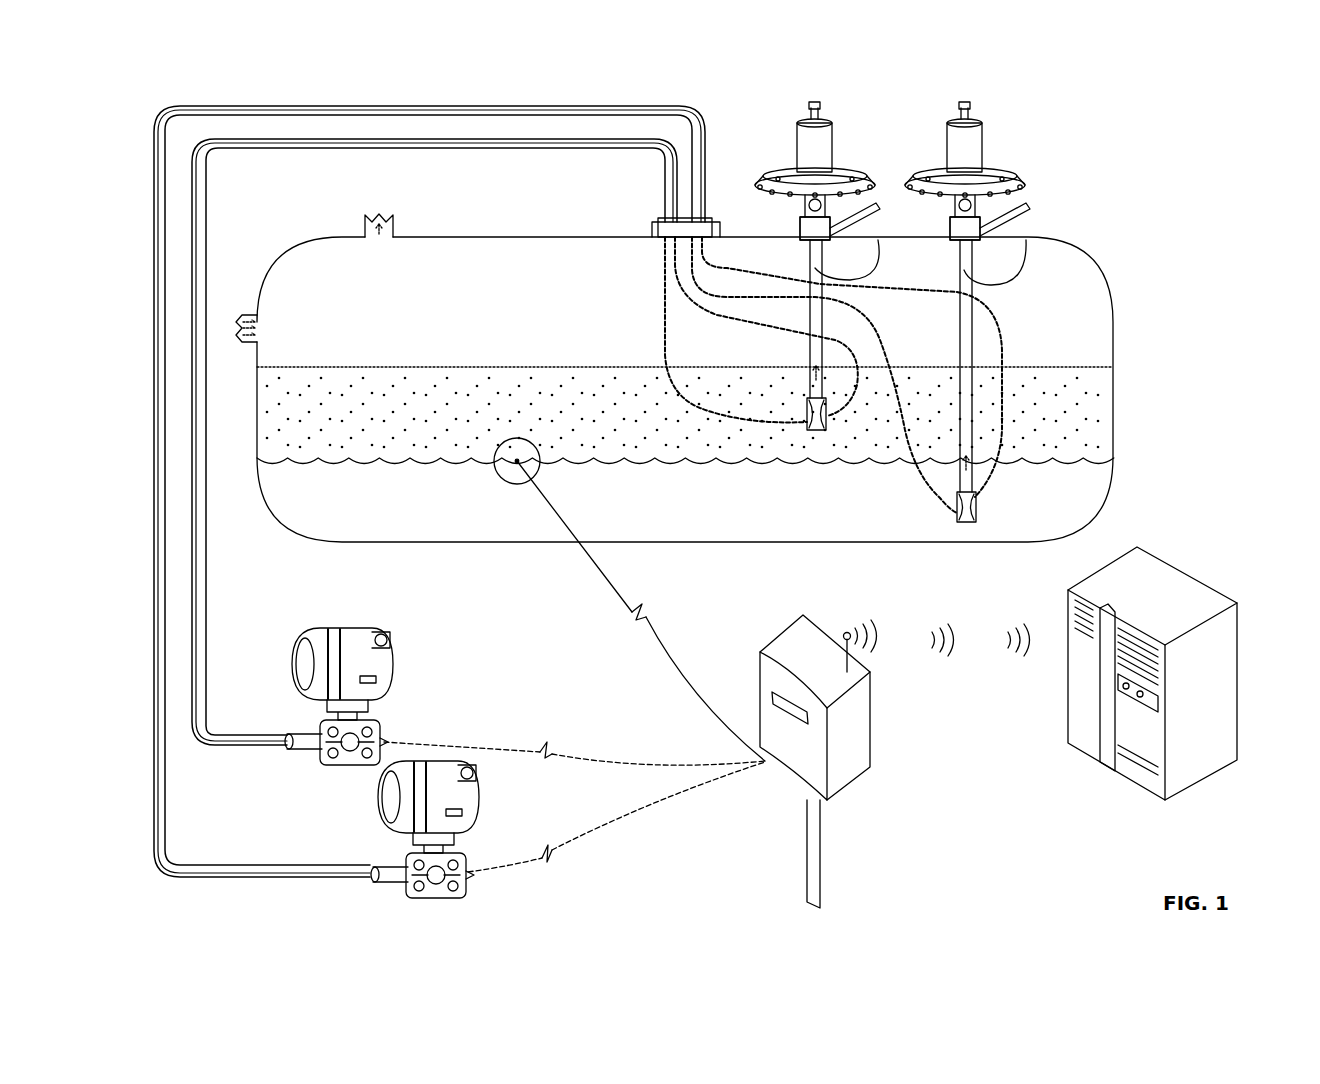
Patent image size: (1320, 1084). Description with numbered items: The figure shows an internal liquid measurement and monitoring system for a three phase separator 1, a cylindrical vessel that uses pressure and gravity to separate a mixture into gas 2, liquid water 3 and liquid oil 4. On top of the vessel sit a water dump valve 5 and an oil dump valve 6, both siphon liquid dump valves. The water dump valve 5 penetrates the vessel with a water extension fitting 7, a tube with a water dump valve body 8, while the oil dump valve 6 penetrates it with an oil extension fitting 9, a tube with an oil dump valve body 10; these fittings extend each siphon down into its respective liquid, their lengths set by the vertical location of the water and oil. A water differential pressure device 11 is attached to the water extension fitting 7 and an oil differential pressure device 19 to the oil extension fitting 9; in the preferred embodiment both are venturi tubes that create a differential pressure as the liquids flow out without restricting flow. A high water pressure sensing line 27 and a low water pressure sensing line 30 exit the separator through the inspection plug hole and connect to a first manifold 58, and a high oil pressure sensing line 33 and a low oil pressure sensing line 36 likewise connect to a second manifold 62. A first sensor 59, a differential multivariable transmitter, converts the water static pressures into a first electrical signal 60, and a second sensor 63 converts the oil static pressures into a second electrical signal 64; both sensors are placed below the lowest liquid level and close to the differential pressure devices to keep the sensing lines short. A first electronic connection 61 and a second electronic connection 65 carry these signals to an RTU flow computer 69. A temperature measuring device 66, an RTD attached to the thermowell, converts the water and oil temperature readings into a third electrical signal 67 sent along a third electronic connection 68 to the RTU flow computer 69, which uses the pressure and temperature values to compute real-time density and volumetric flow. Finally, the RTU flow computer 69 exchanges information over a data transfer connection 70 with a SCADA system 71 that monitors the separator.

The three phase separator 1 is at (1100, 236).
The gas 2 is at (1098, 325).
The liquid water 3 is at (1088, 490).
The liquid oil 4 is at (1098, 413).
The water dump valve 5 is at (975, 150).
The oil dump valve 6 is at (822, 153).
The water extension fitting 7 is at (966, 268).
The water dump valve body 8 is at (952, 225).
The oil extension fitting 9 is at (818, 268).
The oil dump valve body 10 is at (800, 222).
The water differential pressure device 11 is at (966, 522).
The oil differential pressure device 19 is at (812, 430).
The high water pressure sensing line 27 is at (676, 118).
The low water pressure sensing line 30 is at (700, 110).
The high oil pressure sensing line 33 is at (408, 147).
The low oil pressure sensing line 36 is at (400, 140).
The first manifold 58 is at (388, 860).
The first sensor 59 is at (468, 800).
The first electrical signal 60 is at (553, 846).
The first electronic connection 61 is at (628, 822).
The second manifold 62 is at (312, 746).
The second sensor 63 is at (386, 673).
The second electrical signal 64 is at (550, 750).
The second electronic connection 65 is at (590, 763).
The temperature measuring device 66 is at (517, 473).
The third electrical signal 67 is at (630, 616).
The third electronic connection 68 is at (670, 662).
The RTU flow computer 69 is at (858, 764).
The data transfer connection 70 is at (937, 664).
The SCADA system 71 is at (1183, 760).